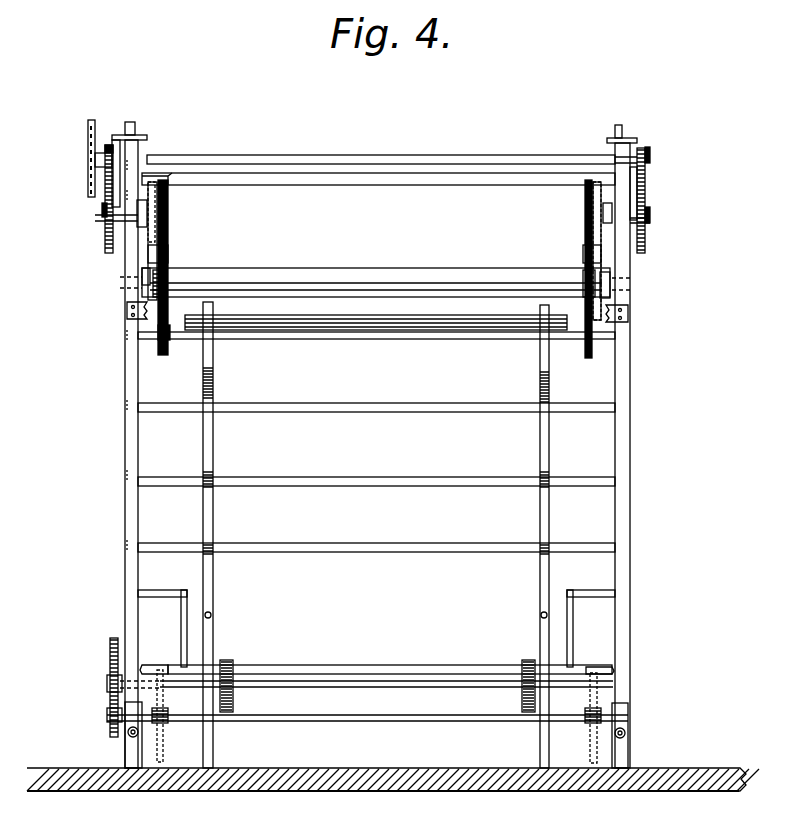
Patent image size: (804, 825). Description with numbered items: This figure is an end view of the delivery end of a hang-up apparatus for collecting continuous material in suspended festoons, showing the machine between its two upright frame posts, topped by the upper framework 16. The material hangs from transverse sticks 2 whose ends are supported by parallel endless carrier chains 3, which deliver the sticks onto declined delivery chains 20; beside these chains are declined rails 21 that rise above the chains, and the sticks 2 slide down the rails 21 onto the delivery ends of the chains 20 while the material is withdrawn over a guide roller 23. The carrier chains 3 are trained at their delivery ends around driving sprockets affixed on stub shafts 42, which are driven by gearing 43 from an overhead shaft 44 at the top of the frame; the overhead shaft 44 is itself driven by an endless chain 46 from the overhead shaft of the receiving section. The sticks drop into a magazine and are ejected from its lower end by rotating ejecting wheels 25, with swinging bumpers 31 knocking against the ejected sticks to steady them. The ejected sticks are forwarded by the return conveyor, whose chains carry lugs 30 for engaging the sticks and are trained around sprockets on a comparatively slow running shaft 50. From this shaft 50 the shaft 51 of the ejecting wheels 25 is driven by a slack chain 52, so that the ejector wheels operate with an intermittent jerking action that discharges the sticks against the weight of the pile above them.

The sticks 2 is at (306, 175).
The carrier chains 3 is at (153, 180).
The upper framework 16 is at (621, 130).
The declined delivery chains 20 is at (150, 258).
The declined rails 21 is at (170, 257).
The guide roller 23 is at (457, 270).
The ejecting wheels 25 is at (233, 700).
The lugs 30 is at (168, 667).
The swinging bumpers 31 is at (182, 633).
The stub shafts 42 is at (102, 208).
The gearing 43 is at (108, 145).
The overhead shaft 44 is at (245, 157).
The endless chain 46 is at (92, 118).
The shaft 50 is at (453, 720).
The shaft 51 is at (441, 686).
The chain 52 is at (110, 697).